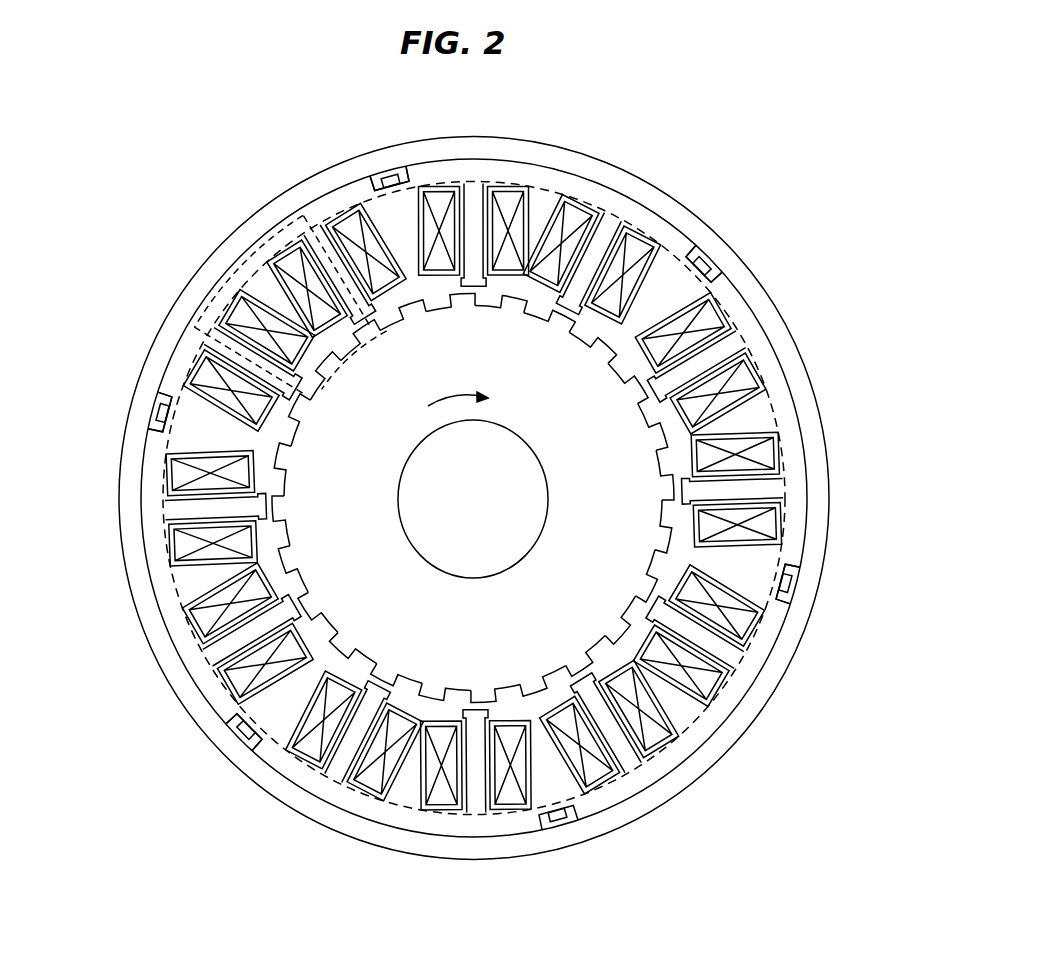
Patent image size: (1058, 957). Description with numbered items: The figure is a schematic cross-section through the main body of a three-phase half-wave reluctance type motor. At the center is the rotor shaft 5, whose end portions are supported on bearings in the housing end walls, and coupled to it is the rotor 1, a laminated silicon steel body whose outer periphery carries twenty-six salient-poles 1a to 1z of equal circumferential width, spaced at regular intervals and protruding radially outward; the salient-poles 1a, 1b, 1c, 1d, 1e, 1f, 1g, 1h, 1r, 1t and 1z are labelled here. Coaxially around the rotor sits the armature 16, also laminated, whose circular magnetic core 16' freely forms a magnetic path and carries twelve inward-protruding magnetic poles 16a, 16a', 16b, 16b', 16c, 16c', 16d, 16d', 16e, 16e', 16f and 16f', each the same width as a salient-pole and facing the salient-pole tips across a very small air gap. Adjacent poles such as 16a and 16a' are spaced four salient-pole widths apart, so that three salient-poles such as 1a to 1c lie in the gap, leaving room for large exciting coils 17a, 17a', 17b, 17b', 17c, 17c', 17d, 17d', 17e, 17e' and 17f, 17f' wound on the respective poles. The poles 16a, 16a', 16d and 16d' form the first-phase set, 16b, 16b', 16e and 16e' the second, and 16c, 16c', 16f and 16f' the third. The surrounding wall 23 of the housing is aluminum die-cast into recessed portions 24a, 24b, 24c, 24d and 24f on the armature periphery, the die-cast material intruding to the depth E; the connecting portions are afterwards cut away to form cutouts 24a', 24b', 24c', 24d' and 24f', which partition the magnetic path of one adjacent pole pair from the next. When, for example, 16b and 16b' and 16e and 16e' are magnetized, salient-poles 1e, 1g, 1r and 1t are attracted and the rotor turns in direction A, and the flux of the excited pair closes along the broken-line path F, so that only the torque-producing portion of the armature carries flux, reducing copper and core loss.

The rotor 1 is at (473, 533).
The salient-pole 1a is at (300, 404).
The salient-pole 1b is at (330, 360).
The salient-pole 1c is at (375, 325).
The salient-pole 1d is at (415, 302).
The salient-pole 1e is at (464, 300).
The salient-pole 1f is at (512, 302).
The salient-pole 1g is at (560, 316).
The salient-pole 1h is at (606, 350).
The salient-pole 1r is at (522, 690).
The salient-pole 1t is at (426, 688).
The salient-pole 1z is at (282, 455).
The rotor shaft 5 is at (550, 495).
The armature 16 is at (474, 460).
The circular magnetic core 16' is at (474, 450).
The magnetic pole 16a is at (295, 400).
The magnetic pole 16a' is at (363, 320).
The magnetic pole 16b is at (487, 284).
The magnetic pole 16b' is at (570, 314).
The magnetic pole 16c is at (648, 393).
The magnetic pole 16c' is at (672, 503).
The magnetic pole 16d is at (643, 615).
The magnetic pole 16d' is at (576, 683).
The magnetic pole 16e is at (469, 712).
The magnetic pole 16e' is at (381, 687).
The magnetic pole 16f is at (299, 614).
The magnetic pole 16f' is at (274, 512).
The exciting coil 17a is at (230, 331).
The exciting coil 17a' is at (336, 234).
The exciting coil 17b is at (483, 178).
The exciting coil 17b' is at (622, 234).
The exciting coil 17c is at (755, 363).
The exciting coil 17c' is at (794, 489).
The exciting coil 17d is at (728, 658).
The exciting coil 17d' is at (609, 770).
The exciting coil 17e is at (476, 823).
The exciting coil 17e' is at (340, 768).
The exciting coil 17f is at (203, 633).
The exciting coil 17f' is at (156, 508).
The surrounding wall 23 is at (456, 140).
The recessed portion 24a is at (119, 408).
The cutout 24a' is at (117, 426).
The recessed portion 24b is at (399, 139).
The cutout 24b' is at (368, 144).
The recessed portion 24c is at (729, 236).
The cutout 24c' is at (758, 261).
The recessed portion 24d is at (829, 584).
The cutout 24d' is at (820, 607).
The recessed portion 24f is at (218, 757).
The cutout 24f' is at (238, 775).
The rotation direction A is at (448, 399).
The intrusion depth E is at (786, 492).
The closed magnetic path F is at (253, 247).